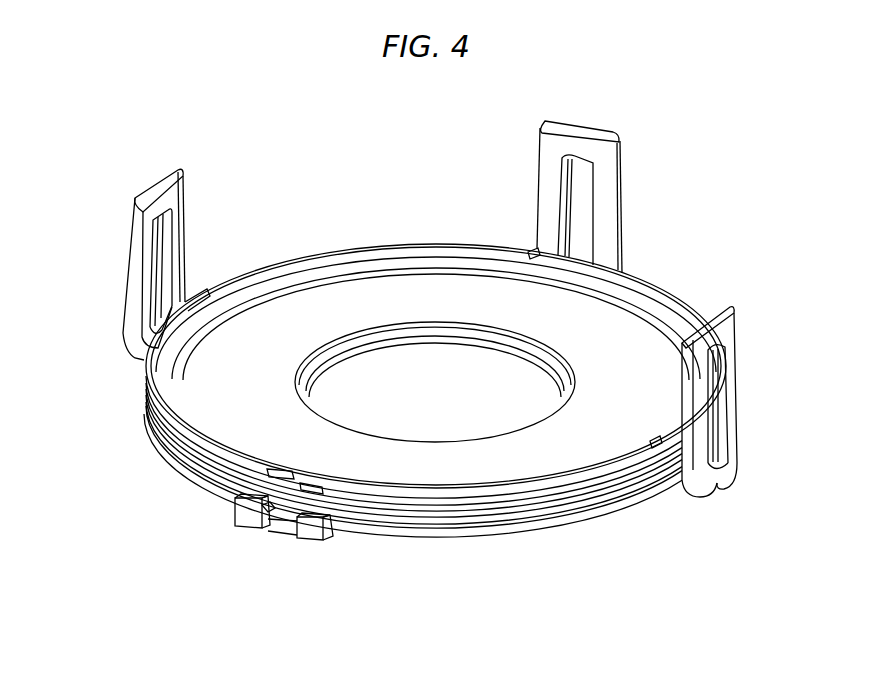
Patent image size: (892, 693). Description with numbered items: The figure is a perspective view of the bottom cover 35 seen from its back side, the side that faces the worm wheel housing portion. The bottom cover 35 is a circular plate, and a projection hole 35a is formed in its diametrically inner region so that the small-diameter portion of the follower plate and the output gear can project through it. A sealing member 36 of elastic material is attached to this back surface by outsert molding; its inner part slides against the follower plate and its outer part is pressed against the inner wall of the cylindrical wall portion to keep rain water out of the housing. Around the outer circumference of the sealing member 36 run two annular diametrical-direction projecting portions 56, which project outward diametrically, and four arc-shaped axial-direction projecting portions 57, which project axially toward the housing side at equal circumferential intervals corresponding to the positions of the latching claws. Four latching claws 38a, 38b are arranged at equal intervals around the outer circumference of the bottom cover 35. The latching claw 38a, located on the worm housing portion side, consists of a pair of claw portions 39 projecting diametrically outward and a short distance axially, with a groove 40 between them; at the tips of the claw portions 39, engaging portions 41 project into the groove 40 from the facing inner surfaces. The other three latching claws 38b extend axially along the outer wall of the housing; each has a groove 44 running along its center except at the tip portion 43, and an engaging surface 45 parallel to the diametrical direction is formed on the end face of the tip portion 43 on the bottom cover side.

The bottom cover 35 is at (680, 130).
The projection hole 35a is at (430, 383).
The sealing member 36 is at (373, 300).
The latching claw 38a is at (284, 564).
The latching claw 38b is at (432, 289).
The claw portion 39 is at (243, 520).
The groove 40 is at (285, 536).
The engaging portion 41 is at (271, 520).
The tip portion 43 is at (166, 200).
The groove 44 is at (160, 231).
The engaging surface 45 is at (168, 217).
The diametrical-direction projecting portion 56 is at (437, 500).
The axial-direction projecting portion 57 is at (199, 297).